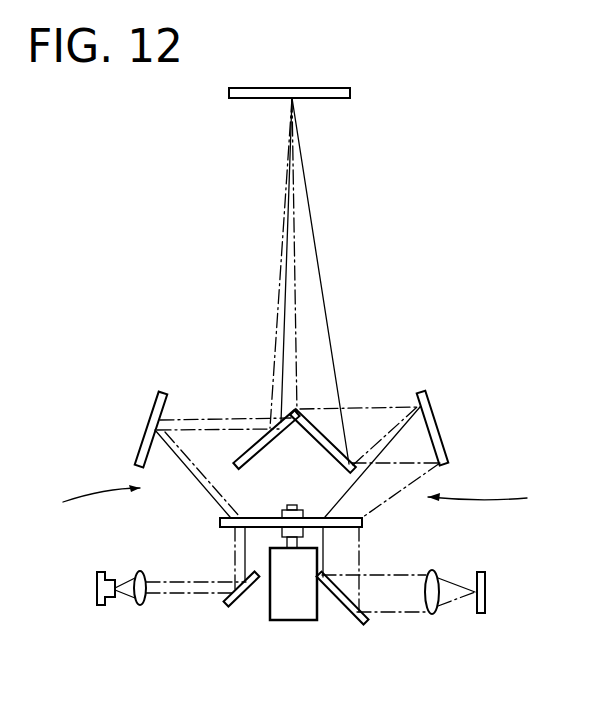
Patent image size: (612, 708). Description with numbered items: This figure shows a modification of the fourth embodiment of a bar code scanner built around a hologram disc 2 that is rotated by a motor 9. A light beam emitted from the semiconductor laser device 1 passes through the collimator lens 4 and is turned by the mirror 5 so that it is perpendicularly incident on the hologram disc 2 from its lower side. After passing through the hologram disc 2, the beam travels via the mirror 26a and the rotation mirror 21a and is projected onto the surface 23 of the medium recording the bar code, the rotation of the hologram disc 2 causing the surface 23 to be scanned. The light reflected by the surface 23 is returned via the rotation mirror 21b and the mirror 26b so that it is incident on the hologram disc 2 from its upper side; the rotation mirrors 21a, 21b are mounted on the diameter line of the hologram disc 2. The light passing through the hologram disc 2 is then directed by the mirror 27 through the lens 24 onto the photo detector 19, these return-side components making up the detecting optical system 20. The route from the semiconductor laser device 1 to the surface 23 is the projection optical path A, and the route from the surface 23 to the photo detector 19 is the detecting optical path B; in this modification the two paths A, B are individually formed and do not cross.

The semiconductor laser device 1 is at (105, 607).
The hologram disc 2 is at (217, 522).
The collimator lens 4 is at (142, 607).
The mirror 5 is at (237, 608).
The motor 9 is at (285, 628).
The photo detector 19 is at (482, 615).
The detecting optical system 20 is at (415, 360).
The rotation mirror 21a is at (247, 445).
The rotation mirror 21b is at (334, 438).
The surface of the medium recording the bar code 23 is at (322, 87).
The lens 24 is at (435, 614).
The mirror 26a is at (155, 415).
The mirror 26b is at (437, 423).
The mirror 27 is at (340, 605).
The projection optical path A is at (90, 502).
The detecting optical path B is at (495, 501).